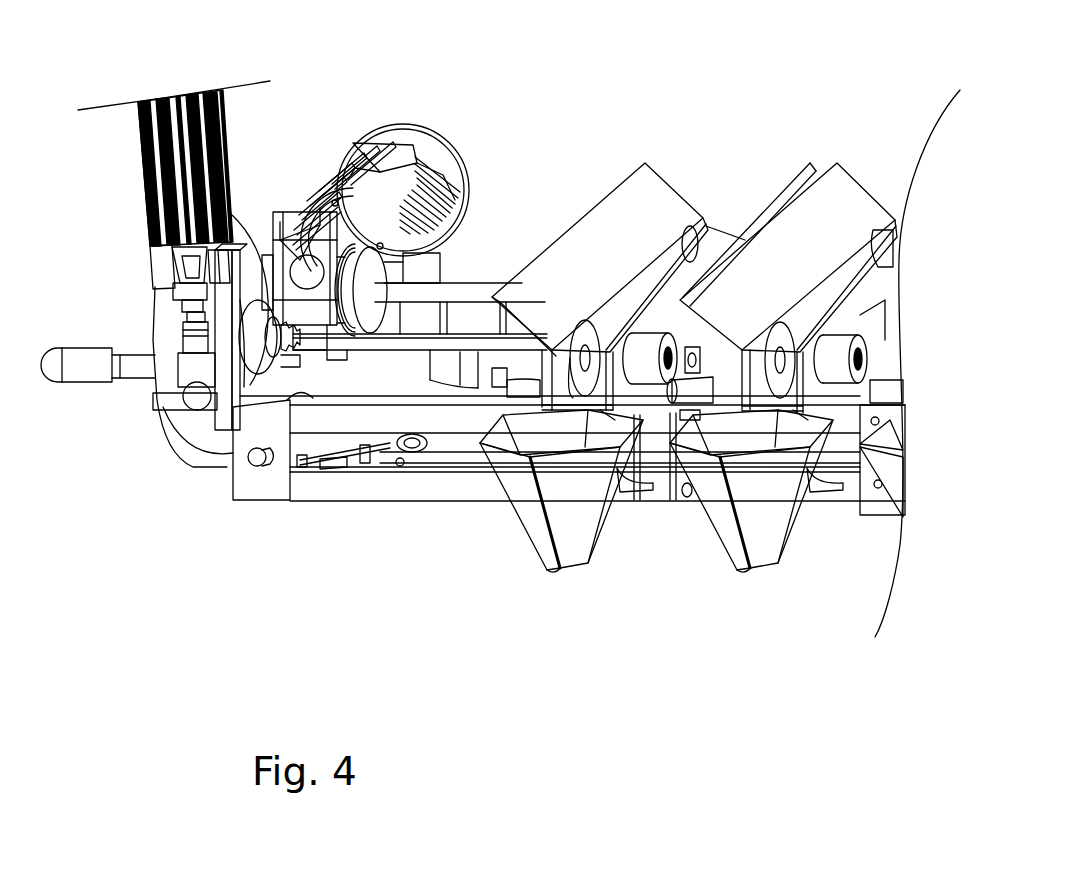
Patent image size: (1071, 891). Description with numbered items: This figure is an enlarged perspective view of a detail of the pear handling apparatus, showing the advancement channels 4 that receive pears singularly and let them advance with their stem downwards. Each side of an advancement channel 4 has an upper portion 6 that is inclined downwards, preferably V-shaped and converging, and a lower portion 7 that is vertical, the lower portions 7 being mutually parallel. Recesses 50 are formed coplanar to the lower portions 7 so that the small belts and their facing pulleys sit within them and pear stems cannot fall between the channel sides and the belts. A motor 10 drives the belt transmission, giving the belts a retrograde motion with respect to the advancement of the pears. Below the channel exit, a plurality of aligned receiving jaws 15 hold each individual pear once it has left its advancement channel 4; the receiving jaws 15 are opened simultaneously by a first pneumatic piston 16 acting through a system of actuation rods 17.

The first pneumatic piston 16 is at (224, 132).
The motor 10 is at (432, 130).
The recesses 50 is at (587, 322).
The upper portions 6 is at (632, 167).
The advancement channels 4 is at (676, 190).
The actuation rods 17 is at (355, 470).
The lower portions 7 is at (745, 378).
The receiving jaws 15 is at (598, 553).